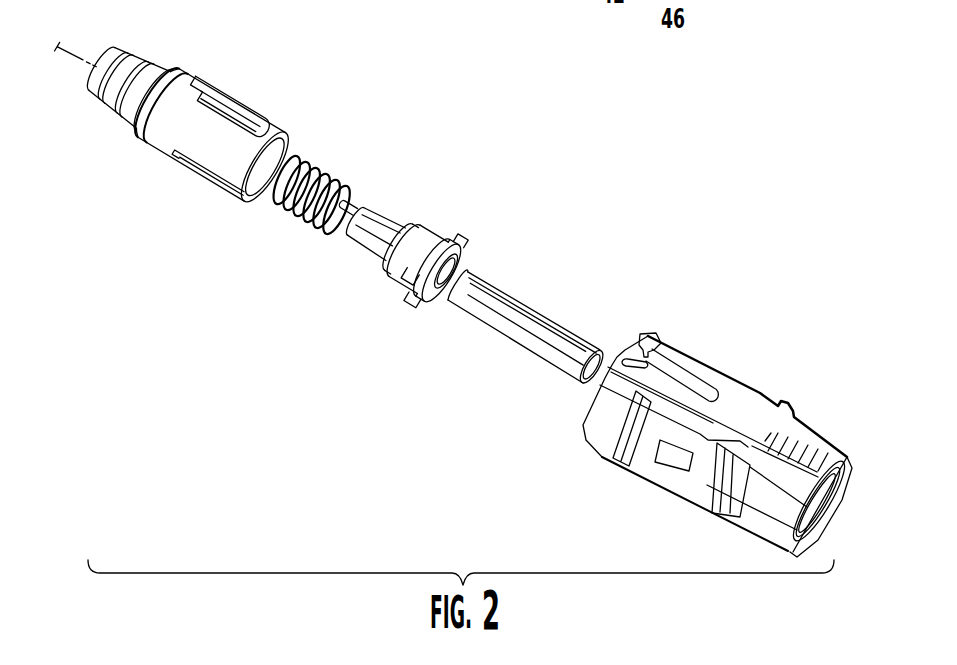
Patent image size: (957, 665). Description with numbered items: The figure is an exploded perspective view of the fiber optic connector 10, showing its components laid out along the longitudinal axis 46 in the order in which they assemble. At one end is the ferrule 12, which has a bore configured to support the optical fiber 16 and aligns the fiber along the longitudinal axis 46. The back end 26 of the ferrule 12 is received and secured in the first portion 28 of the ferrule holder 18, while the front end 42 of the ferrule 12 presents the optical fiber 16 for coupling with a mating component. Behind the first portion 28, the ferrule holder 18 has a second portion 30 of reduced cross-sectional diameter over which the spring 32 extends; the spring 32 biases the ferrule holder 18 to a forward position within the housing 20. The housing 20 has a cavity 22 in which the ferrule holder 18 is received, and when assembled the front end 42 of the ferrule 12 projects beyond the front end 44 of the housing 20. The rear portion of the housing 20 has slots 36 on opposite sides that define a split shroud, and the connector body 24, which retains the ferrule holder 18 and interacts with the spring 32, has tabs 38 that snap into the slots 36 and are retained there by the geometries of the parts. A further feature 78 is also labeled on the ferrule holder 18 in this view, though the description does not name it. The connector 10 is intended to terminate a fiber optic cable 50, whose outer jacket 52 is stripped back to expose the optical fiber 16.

The connector 10 is at (464, 151).
The ferrule 12 is at (569, 314).
The optical fiber 16 is at (77, 55).
The ferrule holder 18 is at (398, 204).
The housing 20 is at (754, 379).
The cavity 22 is at (820, 494).
The connector body 24 is at (198, 75).
The back end 26 is at (467, 268).
The first portion 28 is at (417, 230).
The second portion 30 is at (360, 245).
The spring 32 is at (323, 173).
The slots 36 is at (678, 378).
The tabs 38 is at (247, 103).
The front end 42 is at (598, 384).
The front end 44 is at (848, 458).
The longitudinal axis 46 is at (611, 357).
The fiber optic cable 50 is at (452, 230).
The outer jacket 52 is at (410, 275).
The flange 78 is at (430, 293).